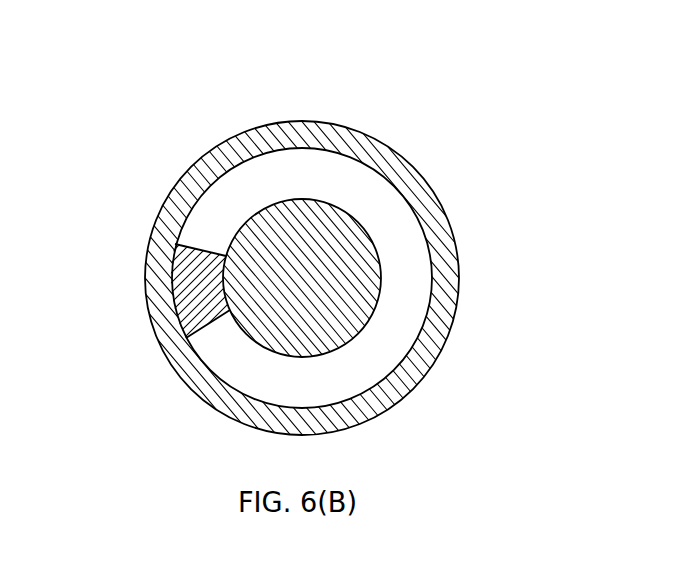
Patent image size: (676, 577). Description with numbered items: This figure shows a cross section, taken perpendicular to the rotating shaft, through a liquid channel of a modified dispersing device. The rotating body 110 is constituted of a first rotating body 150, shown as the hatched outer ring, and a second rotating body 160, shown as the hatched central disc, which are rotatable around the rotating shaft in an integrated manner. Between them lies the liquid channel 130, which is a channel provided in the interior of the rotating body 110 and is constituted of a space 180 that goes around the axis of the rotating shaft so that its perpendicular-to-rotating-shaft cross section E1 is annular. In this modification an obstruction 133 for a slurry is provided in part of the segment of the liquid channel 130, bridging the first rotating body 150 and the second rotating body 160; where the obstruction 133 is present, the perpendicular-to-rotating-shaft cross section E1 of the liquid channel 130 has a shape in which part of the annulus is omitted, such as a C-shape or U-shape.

The rotating body 110 is at (442, 127).
The first rotating body 150 is at (428, 205).
The second rotating body 160 is at (352, 232).
The obstruction 133 is at (183, 290).
The liquid channel 130 is at (211, 125).
The space 180 is at (243, 185).
The perpendicular-to-rotating-shaft cross section E1 is at (322, 177).